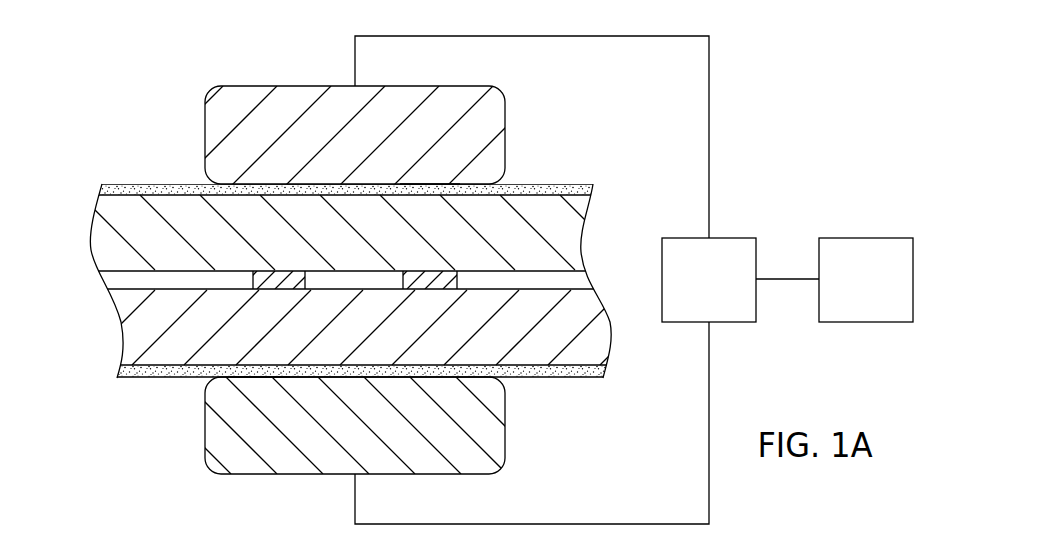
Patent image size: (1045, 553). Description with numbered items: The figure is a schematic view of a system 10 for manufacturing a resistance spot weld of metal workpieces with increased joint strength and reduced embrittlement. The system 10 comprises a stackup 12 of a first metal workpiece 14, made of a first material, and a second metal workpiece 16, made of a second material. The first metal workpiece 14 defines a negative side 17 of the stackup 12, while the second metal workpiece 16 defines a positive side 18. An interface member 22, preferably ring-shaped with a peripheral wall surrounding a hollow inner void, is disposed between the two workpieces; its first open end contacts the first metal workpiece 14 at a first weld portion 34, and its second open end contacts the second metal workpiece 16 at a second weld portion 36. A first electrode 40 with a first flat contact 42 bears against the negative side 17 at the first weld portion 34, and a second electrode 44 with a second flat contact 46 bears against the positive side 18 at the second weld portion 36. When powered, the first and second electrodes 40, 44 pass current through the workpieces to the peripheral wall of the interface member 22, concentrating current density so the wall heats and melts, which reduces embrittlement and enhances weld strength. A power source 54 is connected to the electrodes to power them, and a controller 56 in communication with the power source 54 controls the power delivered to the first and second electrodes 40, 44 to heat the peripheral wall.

The system 10 is at (231, 50).
The stackup 12 is at (98, 193).
The first metal workpiece 14 is at (128, 232).
The second metal workpiece 16 is at (130, 335).
The negative side 17 is at (560, 184).
The positive side 18 is at (563, 377).
The interface member 22 is at (245, 282).
The first weld portion 34 is at (432, 271).
The second weld portion 36 is at (432, 289).
The first electrode 40 is at (334, 138).
The first flat contact 42 is at (427, 184).
The second electrode 44 is at (334, 429).
The second flat contact 46 is at (258, 377).
The power source 54 is at (866, 280).
The controller 56 is at (740, 280).